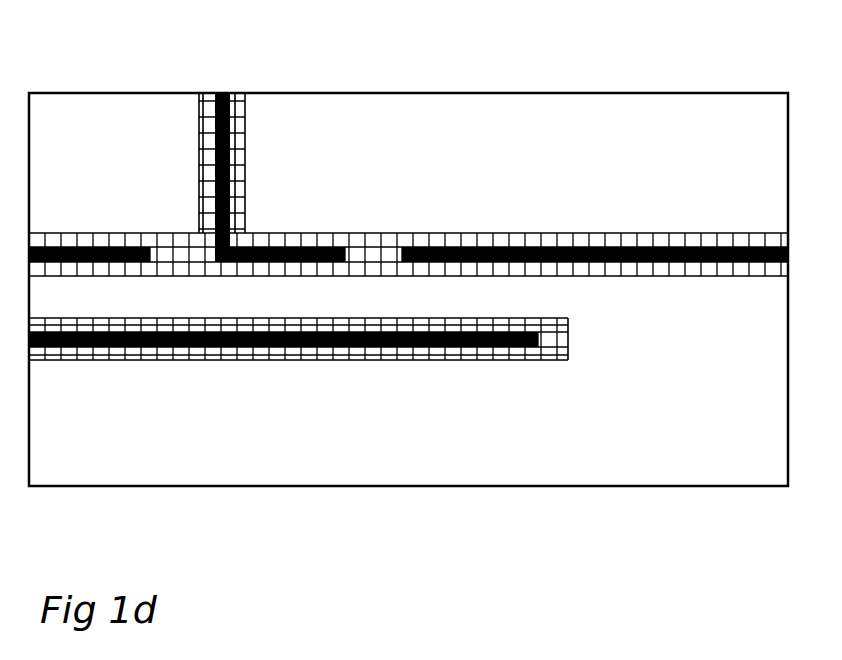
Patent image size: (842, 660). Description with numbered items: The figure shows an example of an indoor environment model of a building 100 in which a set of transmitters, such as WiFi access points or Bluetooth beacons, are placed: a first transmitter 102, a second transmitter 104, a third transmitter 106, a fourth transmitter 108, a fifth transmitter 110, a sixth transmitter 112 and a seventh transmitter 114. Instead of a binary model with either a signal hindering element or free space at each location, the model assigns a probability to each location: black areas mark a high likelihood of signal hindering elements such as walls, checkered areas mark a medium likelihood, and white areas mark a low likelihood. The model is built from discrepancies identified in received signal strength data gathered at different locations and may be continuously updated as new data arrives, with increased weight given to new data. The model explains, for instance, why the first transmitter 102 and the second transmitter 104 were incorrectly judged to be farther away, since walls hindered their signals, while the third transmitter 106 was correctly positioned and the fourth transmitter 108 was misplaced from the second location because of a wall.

The building 100 is at (647, 69).
The first transmitter 102 is at (142, 178).
The second transmitter 104 is at (183, 402).
The third transmitter 106 is at (408, 289).
The fourth transmitter 108 is at (492, 345).
The fifth transmitter 110 is at (603, 402).
The sixth transmitter 112 is at (633, 233).
The seventh transmitter 114 is at (745, 135).